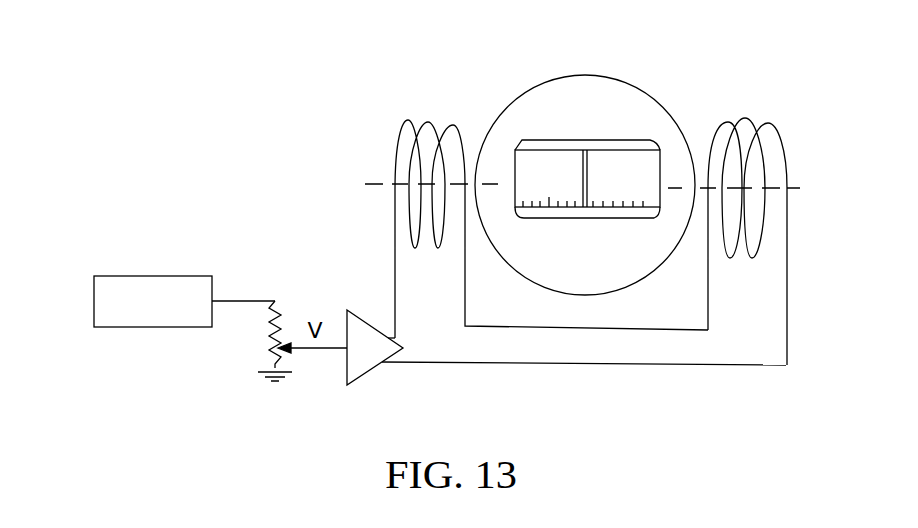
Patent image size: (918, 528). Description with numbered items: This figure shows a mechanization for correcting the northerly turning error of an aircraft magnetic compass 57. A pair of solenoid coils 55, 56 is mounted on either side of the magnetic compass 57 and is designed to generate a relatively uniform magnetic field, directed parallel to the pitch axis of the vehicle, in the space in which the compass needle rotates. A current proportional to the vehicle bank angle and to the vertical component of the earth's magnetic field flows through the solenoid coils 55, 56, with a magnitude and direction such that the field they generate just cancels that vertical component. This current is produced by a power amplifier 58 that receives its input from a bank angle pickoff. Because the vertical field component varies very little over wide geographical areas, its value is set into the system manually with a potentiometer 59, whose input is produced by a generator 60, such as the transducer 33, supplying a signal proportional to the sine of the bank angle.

The transducer 33 is at (587, 179).
The solenoid coil 55 is at (407, 120).
The solenoid coil 56 is at (747, 119).
The magnetic compass 57 is at (636, 87).
The power amplifier 58 is at (364, 374).
The potentiometer 59 is at (279, 309).
The generator 60 is at (157, 276).